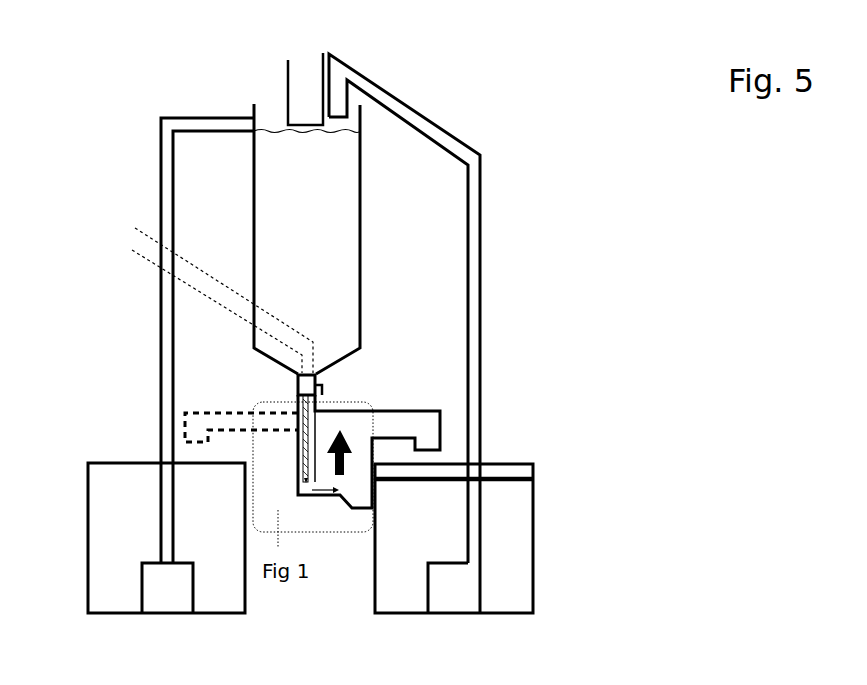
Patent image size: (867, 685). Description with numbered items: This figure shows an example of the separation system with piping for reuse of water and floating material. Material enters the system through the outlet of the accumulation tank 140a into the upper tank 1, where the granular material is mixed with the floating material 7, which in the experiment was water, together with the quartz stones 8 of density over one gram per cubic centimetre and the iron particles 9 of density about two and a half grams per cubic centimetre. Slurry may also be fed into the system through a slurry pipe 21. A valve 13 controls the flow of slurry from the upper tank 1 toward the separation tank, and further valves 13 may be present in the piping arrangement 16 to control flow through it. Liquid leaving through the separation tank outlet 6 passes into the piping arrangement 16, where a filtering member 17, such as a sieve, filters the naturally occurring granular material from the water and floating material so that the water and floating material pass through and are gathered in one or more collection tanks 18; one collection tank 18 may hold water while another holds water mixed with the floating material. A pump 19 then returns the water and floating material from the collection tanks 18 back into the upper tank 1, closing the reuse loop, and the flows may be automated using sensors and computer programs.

The outlet of the accumulation tank 140a is at (305, 103).
The upper tank 1 is at (430, 333).
The floating material 7 is at (430, 333).
The quartz stones 8 is at (430, 333).
The iron particles 9 is at (322, 195).
The piping arrangement 16 is at (161, 297).
The slurry pipe 21 is at (135, 242).
The valve 13 is at (323, 384).
The separation tank outlet 6 is at (185, 423).
The collection tank 18 is at (115, 530).
The pump 19 is at (162, 585).
The filtering member 17 is at (537, 480).